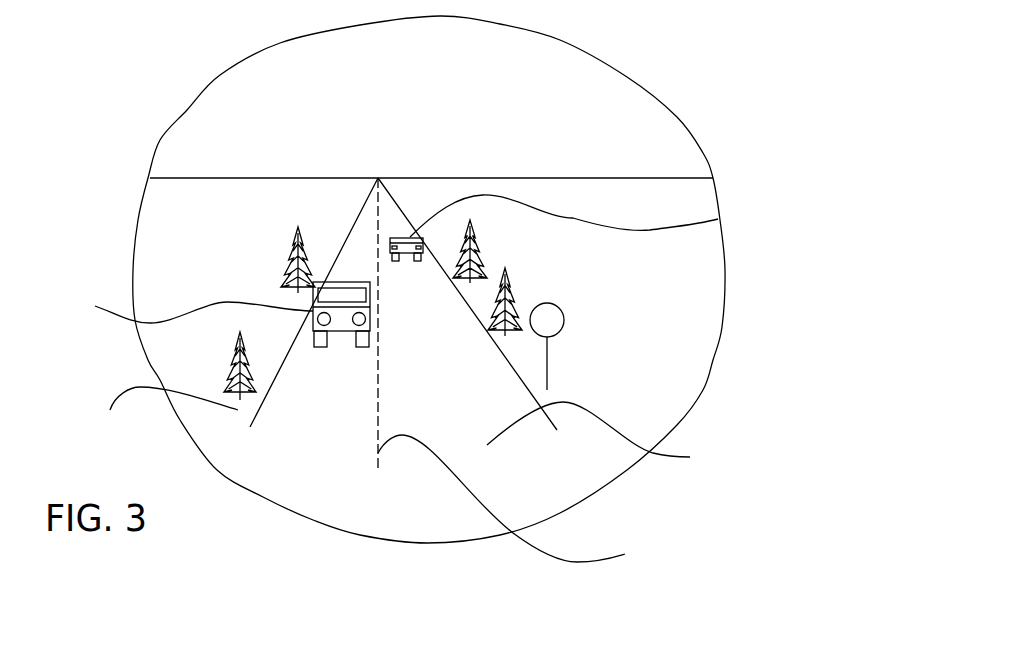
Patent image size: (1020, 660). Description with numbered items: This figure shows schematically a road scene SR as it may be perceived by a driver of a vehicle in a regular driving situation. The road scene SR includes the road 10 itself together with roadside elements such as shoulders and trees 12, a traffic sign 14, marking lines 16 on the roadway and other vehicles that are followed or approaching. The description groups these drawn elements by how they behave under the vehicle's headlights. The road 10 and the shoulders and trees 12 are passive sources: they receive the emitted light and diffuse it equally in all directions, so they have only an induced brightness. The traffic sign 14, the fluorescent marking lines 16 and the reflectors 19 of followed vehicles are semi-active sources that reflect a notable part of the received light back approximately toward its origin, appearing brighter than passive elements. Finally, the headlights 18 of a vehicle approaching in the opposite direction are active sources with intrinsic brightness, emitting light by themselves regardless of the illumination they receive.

The road scene SR is at (682, 88).
The reflectors of other vehicles that are followed 19 is at (718, 219).
The headlights of other approaching vehicles 18 is at (95, 306).
The shoulders and trees 12 is at (149, 407).
The fluorescent marking lines 16 is at (625, 554).
The road 10 is at (690, 457).
The traffic sign 14 is at (564, 315).